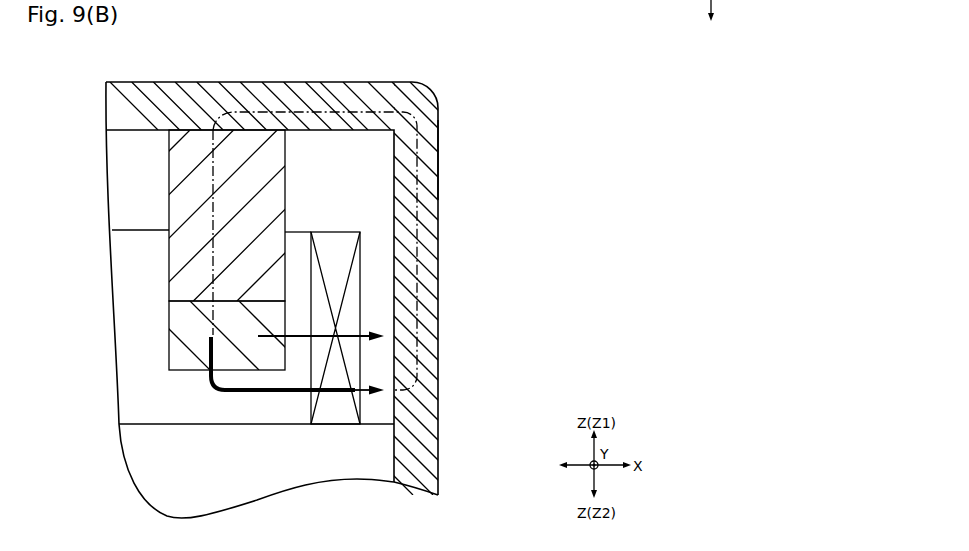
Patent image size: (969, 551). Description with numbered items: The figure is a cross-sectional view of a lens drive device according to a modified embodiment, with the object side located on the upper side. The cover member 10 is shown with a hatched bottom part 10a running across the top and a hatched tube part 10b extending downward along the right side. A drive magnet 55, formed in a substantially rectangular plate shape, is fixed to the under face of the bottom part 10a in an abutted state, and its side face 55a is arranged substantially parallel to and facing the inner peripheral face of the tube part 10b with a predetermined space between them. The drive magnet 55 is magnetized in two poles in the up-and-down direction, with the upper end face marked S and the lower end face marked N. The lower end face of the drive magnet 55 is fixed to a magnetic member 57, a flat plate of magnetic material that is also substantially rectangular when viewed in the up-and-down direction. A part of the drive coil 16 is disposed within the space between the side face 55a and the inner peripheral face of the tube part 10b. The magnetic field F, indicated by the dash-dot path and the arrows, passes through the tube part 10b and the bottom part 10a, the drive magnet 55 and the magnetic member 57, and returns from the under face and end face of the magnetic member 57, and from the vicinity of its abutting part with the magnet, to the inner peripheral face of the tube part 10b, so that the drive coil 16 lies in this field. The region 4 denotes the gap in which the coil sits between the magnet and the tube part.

The cover member 10 is at (411, 279).
The bottom part 10a is at (271, 81).
The tube part 10b is at (439, 163).
The gap 4 is at (380, 208).
The drive coil 16 is at (360, 300).
The drive magnet 55 is at (213, 215).
The side face 55a is at (286, 174).
The magnetic member 57 is at (168, 326).
The magnetic field F is at (293, 337).